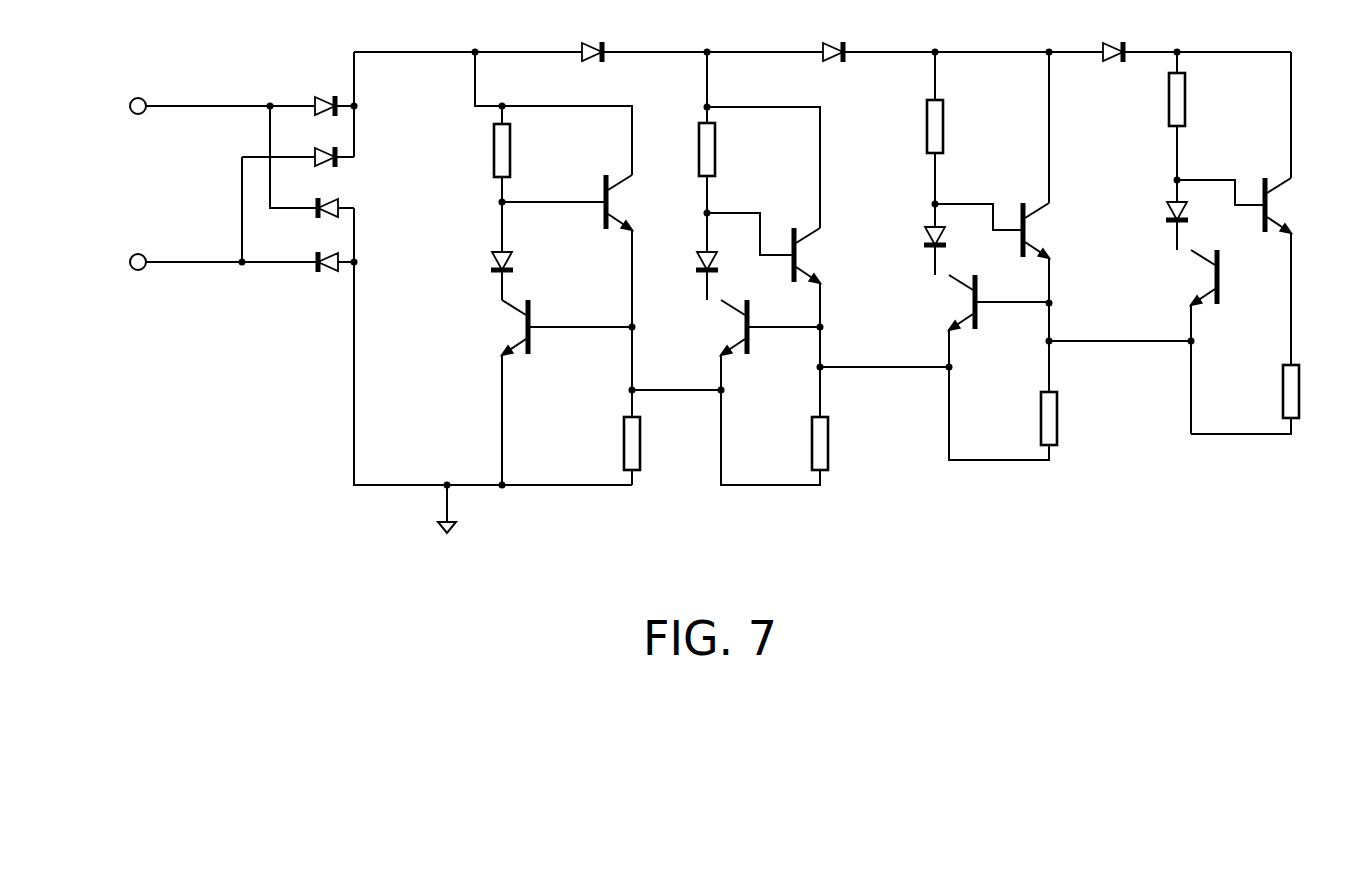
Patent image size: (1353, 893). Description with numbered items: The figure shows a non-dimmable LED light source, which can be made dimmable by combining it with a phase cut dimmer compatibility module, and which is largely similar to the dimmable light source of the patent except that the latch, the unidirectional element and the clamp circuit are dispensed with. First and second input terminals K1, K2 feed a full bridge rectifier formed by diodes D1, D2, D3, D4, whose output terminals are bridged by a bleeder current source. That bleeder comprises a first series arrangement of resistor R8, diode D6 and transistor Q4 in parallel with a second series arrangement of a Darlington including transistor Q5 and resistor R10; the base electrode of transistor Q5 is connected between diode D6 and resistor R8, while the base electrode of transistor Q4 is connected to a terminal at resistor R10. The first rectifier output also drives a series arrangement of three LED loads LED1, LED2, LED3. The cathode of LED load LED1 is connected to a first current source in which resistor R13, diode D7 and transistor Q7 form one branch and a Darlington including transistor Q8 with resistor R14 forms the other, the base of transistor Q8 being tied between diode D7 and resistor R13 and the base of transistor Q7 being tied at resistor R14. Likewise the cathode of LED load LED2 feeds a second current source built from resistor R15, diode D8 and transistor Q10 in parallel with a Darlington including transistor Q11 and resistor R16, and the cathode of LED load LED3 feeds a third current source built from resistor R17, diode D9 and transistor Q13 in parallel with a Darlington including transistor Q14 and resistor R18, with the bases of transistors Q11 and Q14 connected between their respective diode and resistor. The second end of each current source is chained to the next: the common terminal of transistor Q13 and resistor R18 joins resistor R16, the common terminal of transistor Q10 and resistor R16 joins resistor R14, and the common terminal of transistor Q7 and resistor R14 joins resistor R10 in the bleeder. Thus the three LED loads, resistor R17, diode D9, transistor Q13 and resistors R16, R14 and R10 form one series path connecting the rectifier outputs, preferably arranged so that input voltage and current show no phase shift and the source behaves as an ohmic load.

The first input terminal K1 is at (121, 115).
The second input terminal K2 is at (121, 271).
The rectifier diode D1 is at (308, 95).
The rectifier diode D2 is at (308, 147).
The rectifier diode D3 is at (310, 197).
The rectifier diode D4 is at (310, 251).
The LED load LED1 is at (602, 38).
The LED load LED2 is at (842, 38).
The LED load LED3 is at (1119, 38).
The resistor R8 is at (517, 150).
The transistor Q5 is at (625, 202).
The diode D6 is at (517, 258).
The transistor Q4 is at (502, 327).
The resistor R10 is at (652, 443).
The resistor R13 is at (726, 149).
The transistor Q8 is at (814, 255).
The diode D7 is at (694, 276).
The transistor Q7 is at (724, 327).
The resistor R14 is at (840, 443).
The resistor R15 is at (955, 126).
The transistor Q11 is at (1049, 230).
The diode D8 is at (951, 233).
The transistor Q10 is at (945, 302).
The resistor R16 is at (1070, 418).
The resistor R17 is at (1197, 99).
The transistor Q14 is at (1291, 205).
The diode D9 is at (1193, 208).
The transistor Q13 is at (1184, 277).
The resistor R18 is at (1267, 391).